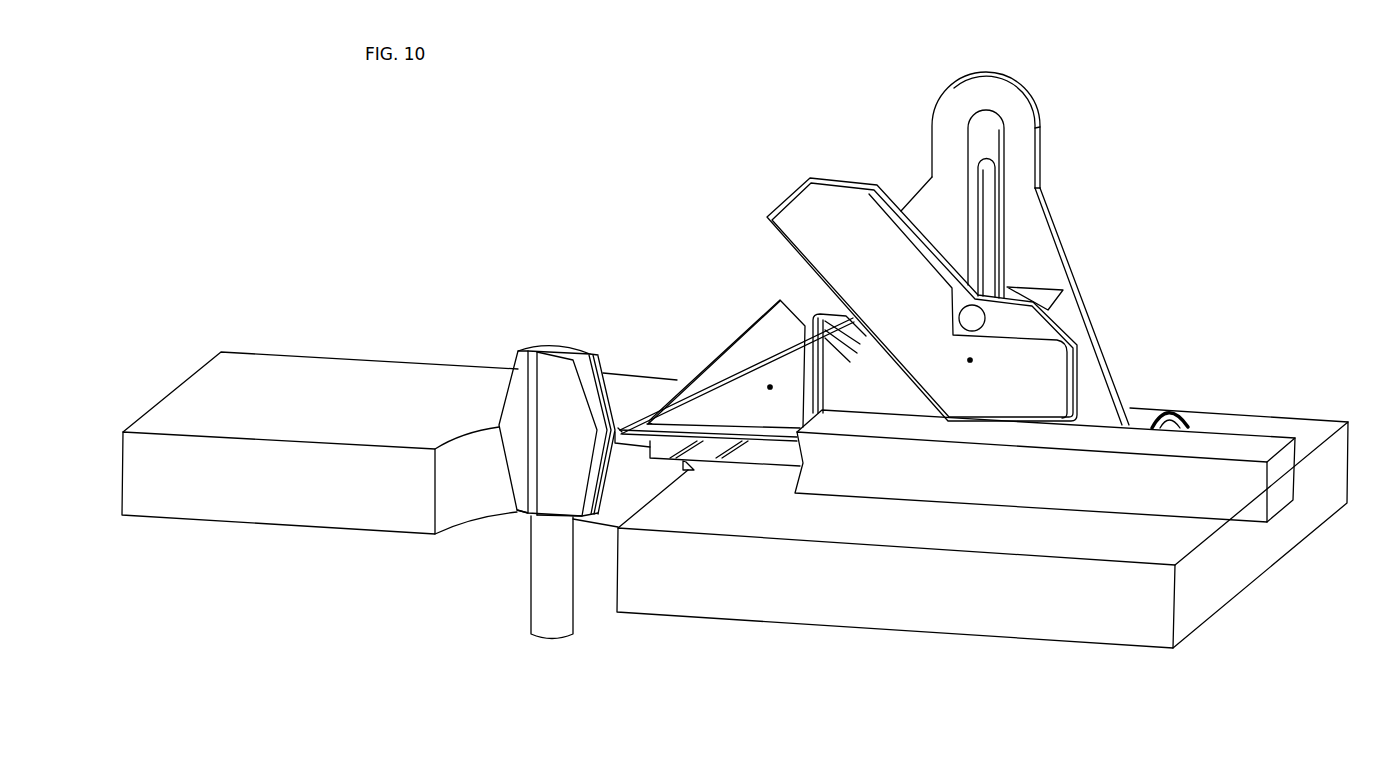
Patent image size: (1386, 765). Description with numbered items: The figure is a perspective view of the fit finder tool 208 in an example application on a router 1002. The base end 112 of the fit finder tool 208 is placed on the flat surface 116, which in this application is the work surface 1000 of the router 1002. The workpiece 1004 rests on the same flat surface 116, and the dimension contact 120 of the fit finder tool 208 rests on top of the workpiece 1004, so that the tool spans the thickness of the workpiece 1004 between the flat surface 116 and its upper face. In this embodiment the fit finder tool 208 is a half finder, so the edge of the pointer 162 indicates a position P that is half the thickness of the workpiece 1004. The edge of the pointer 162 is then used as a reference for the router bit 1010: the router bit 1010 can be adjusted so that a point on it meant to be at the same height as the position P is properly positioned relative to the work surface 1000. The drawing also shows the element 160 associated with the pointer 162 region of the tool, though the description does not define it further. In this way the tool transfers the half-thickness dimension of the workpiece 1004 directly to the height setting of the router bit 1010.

The router bit 1010 is at (513, 412).
The position P is at (620, 427).
The triangular plate 160 is at (787, 360).
The pointer 162 is at (668, 418).
The flat surface 116 is at (1104, 542).
The router 1002 is at (956, 550).
The work surface 1000 is at (956, 522).
The workpiece 1004 is at (1174, 480).
The base end 112 is at (1097, 407).
The fit finder tool 208 is at (1042, 257).
The dimension contact 120 is at (987, 428).